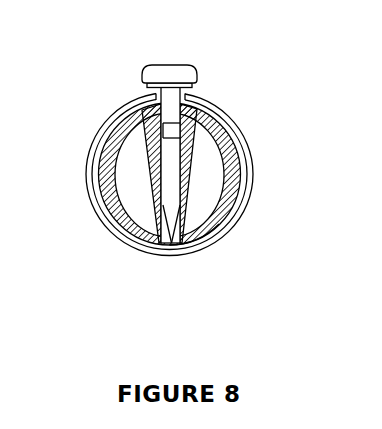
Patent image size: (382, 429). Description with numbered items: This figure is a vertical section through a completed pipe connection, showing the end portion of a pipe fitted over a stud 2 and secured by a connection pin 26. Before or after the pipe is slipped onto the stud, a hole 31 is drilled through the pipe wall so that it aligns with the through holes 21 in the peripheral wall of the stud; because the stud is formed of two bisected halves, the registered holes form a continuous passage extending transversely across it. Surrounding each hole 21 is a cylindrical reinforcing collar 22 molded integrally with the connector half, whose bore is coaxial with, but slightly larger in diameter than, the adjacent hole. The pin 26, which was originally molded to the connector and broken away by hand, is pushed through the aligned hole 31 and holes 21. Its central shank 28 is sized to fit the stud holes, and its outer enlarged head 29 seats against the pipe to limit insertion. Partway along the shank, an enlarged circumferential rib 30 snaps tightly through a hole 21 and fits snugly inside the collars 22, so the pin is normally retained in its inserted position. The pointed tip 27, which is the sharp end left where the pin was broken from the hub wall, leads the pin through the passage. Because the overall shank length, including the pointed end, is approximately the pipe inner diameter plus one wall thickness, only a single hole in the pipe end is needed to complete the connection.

The stud 2 is at (185, 169).
The through hole 21 is at (172, 246).
The reinforcing collar 22 is at (196, 199).
The pin 26 is at (194, 82).
The pointed tip 27 is at (200, 247).
The shank 28 is at (173, 183).
The head 29 is at (171, 72).
The circumferential rib 30 is at (221, 121).
The hole 31 is at (160, 88).